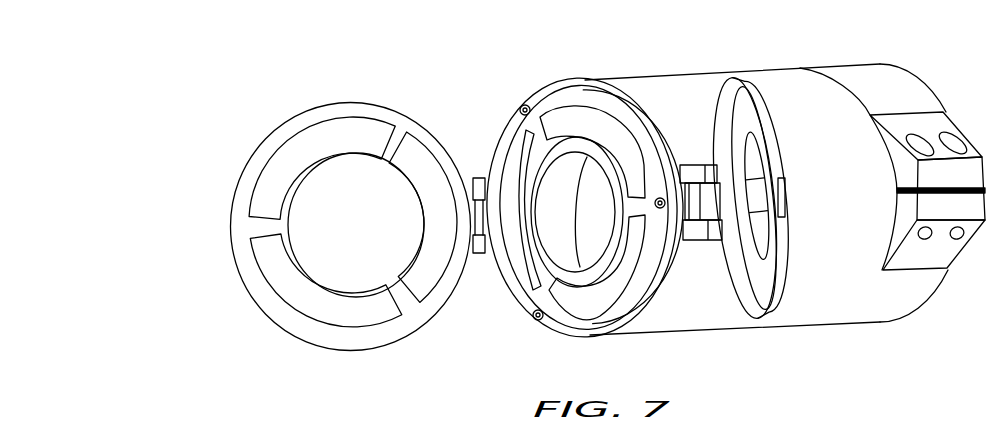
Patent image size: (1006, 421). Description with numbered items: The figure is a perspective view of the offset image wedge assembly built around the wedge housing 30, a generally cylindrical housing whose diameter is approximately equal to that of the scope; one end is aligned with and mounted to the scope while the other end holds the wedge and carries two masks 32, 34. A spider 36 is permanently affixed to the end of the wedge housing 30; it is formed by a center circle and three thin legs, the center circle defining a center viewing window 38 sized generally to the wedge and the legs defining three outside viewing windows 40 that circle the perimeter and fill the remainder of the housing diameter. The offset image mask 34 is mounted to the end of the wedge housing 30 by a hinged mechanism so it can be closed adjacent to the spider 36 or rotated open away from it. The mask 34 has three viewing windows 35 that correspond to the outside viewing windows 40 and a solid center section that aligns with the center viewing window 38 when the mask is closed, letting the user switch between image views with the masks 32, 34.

The wedge housing 30 is at (785, 188).
The mask 32 is at (757, 295).
The offset image mask 34 is at (320, 203).
The viewing windows 35 is at (267, 253).
The spider 36 is at (564, 205).
The center viewing window 38 is at (597, 240).
The outside viewing windows 40 is at (622, 140).